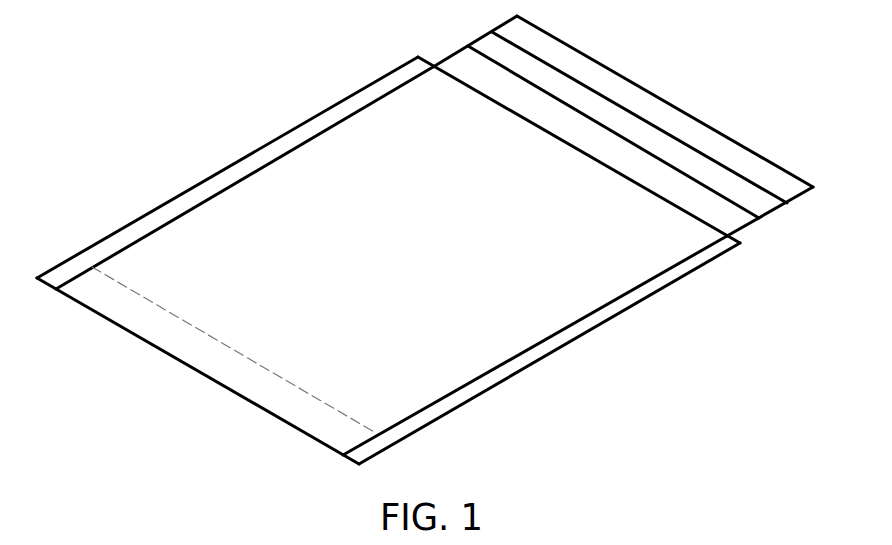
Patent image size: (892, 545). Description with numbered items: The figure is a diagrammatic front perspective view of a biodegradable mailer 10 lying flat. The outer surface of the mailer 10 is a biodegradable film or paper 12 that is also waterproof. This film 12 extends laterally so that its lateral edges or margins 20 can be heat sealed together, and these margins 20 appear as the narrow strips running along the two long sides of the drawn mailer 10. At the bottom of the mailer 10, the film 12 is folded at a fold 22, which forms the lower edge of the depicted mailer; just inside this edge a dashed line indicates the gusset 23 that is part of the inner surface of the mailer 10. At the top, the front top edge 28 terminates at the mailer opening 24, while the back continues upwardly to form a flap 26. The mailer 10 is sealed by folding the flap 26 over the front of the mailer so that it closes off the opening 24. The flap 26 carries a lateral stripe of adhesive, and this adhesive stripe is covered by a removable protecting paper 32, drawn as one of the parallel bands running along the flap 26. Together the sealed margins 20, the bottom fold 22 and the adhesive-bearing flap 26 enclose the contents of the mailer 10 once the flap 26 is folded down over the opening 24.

The mailer 10 is at (427, 245).
The biodegradable film or paper 12 is at (578, 278).
The lateral edges or margins 20 is at (202, 200).
The fold 22 is at (200, 372).
The gusset 23 is at (160, 301).
The mailer opening 24 is at (567, 117).
The flap 26 is at (737, 217).
The front top edge 28 is at (487, 98).
The removable protecting paper 32 is at (660, 147).